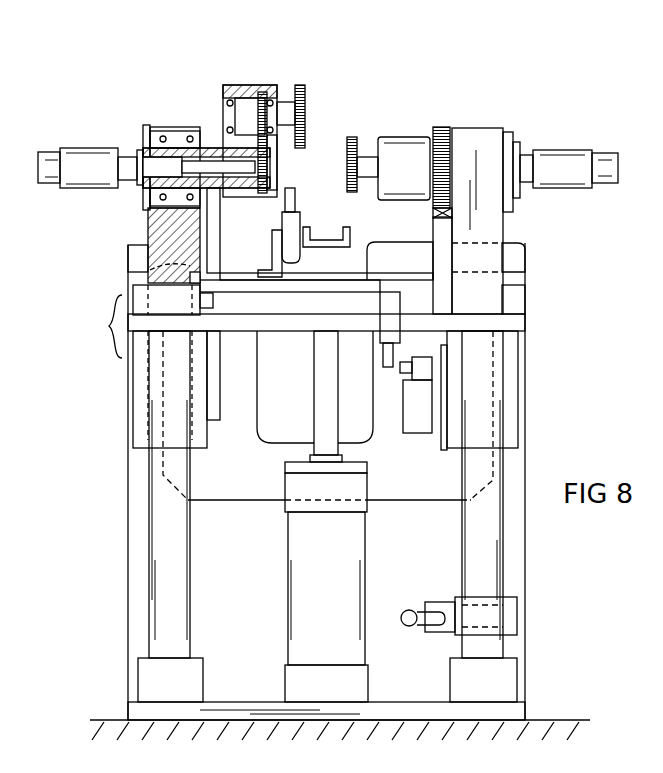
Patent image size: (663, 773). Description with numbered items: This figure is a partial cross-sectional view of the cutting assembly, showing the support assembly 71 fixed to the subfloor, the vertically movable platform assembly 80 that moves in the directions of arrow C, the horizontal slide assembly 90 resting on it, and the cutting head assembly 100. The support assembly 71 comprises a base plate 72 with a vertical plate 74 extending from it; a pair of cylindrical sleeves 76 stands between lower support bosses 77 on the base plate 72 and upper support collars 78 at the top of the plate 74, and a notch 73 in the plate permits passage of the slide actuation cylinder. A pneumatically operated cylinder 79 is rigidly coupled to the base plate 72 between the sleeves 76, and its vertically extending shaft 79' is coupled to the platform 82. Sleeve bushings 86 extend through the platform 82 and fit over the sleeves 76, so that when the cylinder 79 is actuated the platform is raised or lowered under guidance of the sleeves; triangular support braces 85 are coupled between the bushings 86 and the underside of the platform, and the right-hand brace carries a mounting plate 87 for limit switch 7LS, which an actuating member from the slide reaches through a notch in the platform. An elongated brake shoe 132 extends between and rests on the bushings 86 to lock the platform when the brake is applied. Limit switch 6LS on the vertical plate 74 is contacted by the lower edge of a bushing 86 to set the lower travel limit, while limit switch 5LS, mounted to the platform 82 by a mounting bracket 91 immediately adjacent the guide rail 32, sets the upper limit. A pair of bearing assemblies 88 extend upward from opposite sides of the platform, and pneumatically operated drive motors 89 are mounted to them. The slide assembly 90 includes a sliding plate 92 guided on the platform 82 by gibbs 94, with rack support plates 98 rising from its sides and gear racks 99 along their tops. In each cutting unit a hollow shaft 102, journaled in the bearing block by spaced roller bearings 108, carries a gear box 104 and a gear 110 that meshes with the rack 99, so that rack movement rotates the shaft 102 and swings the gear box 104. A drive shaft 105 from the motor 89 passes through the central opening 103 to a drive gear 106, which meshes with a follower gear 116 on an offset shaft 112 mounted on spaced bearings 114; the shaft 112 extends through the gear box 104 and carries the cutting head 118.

The support assembly 71 is at (530, 562).
The base plate 72 is at (523, 709).
The notch 73 is at (262, 404).
The vertical plate 74 is at (240, 626).
The cylindrical sleeves 76 is at (192, 558).
The lower support bosses 77 is at (203, 674).
The upper support collars 78 is at (133, 260).
The pneumatically operated cylinder 79 is at (342, 582).
The vertically extending shaft 79' is at (311, 396).
The vertically movable platform assembly 80 is at (176, 337).
The platform 82 is at (520, 321).
The support braces 85 is at (208, 428).
The sleeve bushings 86 is at (550, 413).
The mounting plate 87 is at (438, 434).
The bearing assembly 88 is at (148, 233).
The drive motors 89 is at (62, 146).
The horizontal slide assembly 90 is at (283, 314).
The mounting bracket 91 is at (271, 281).
The sliding plate 92 is at (203, 296).
The gibbs 94 is at (207, 300).
The rack support plates 98 is at (215, 235).
The gear racks 99 is at (258, 205).
The cutting head assembly 100 is at (220, 76).
The shaft 102 is at (188, 146).
The central opening 103 is at (226, 100).
The gear box 104 is at (259, 92).
The drive shaft 105 is at (165, 195).
The drive gear 106 is at (262, 197).
The roller bearings 108 is at (160, 131).
The gear 110 is at (178, 140).
The shaft 112 is at (280, 100).
The bearings 114 is at (208, 93).
The follower gear 116 is at (272, 92).
The cutting head 118 is at (304, 85).
The brake shoe 132 is at (235, 501).
The guide rail 32 is at (322, 227).
The limit switch 5LS is at (300, 258).
The limit switch 6LS is at (408, 609).
The limit switch 7LS is at (403, 396).
The arrow C is at (480, 368).